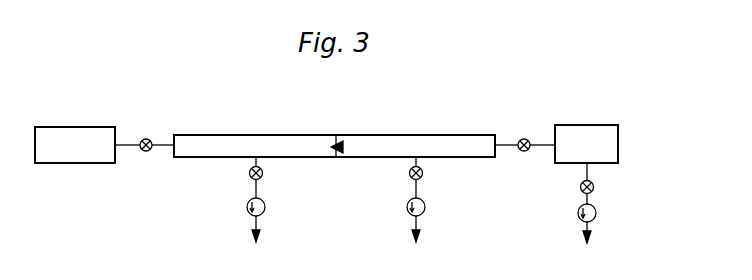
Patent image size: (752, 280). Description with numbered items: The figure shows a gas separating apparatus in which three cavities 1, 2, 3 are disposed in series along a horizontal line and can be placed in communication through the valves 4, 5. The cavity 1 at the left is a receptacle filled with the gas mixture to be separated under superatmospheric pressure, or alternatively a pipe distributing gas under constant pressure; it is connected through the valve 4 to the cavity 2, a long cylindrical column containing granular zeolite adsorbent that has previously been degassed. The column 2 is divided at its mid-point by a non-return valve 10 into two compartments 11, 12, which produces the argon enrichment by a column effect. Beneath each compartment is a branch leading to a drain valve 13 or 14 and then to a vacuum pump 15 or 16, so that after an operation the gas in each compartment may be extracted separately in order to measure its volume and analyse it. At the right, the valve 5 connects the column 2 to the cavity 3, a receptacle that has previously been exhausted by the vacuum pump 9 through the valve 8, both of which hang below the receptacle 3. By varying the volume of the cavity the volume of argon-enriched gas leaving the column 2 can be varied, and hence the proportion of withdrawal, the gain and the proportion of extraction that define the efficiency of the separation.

The cavity 1 is at (65, 126).
The cavity 2 is at (334, 131).
The cavity 3 is at (585, 124).
The valve 4 is at (143, 152).
The valve 5 is at (523, 152).
The valve 8 is at (595, 187).
The vacuum pump 9 is at (597, 215).
The non-return valve 10 is at (343, 150).
The compartment 11 is at (217, 140).
The compartment 12 is at (412, 138).
The drain valve 13 is at (249, 175).
The drain valve 14 is at (423, 173).
The vacuum pump 15 is at (247, 210).
The vacuum pump 16 is at (427, 208).